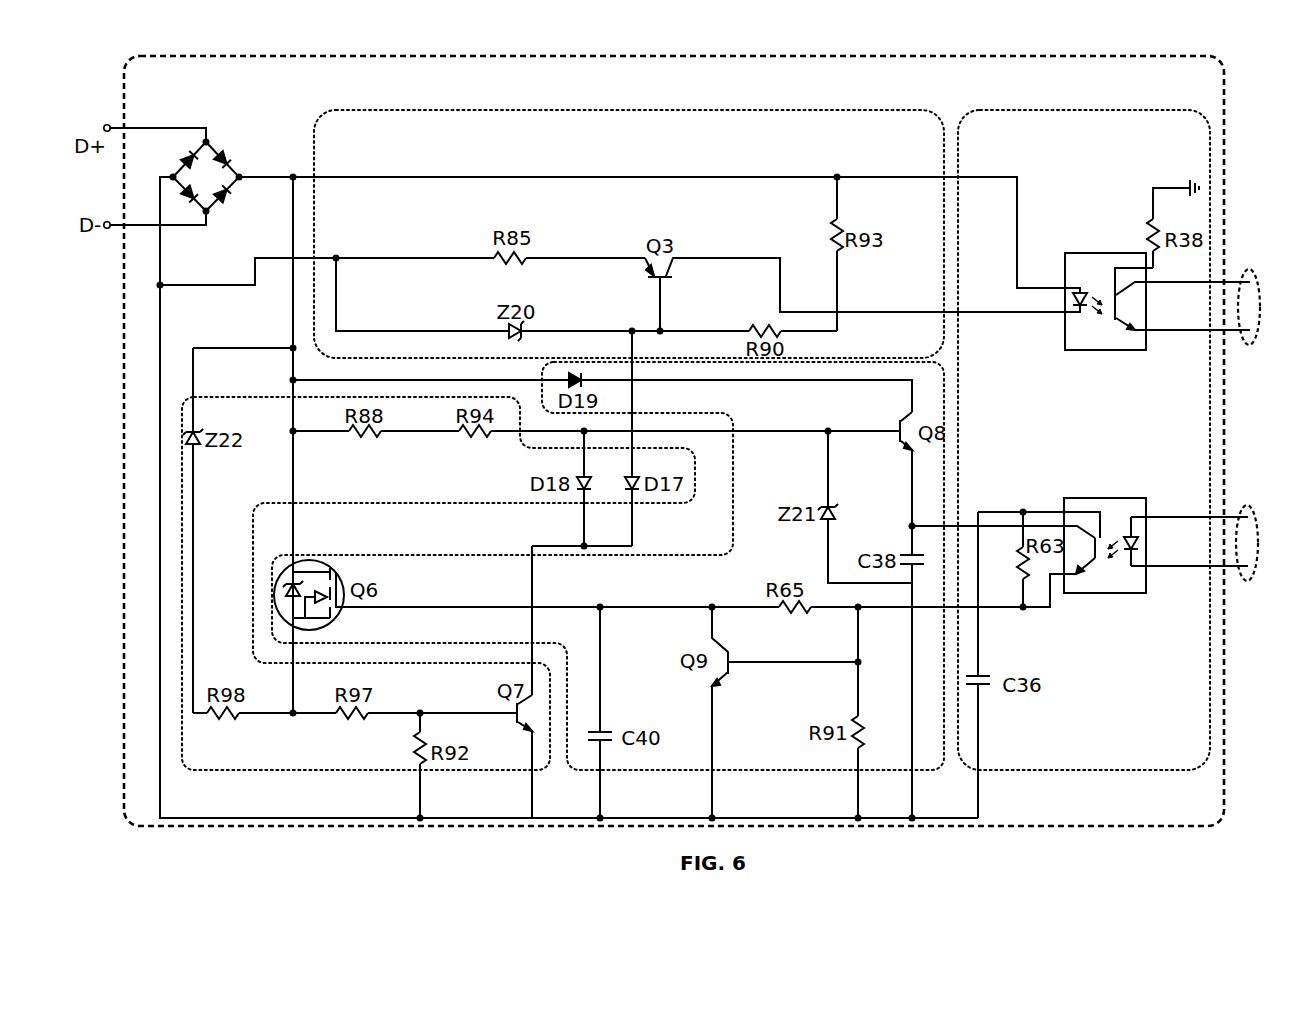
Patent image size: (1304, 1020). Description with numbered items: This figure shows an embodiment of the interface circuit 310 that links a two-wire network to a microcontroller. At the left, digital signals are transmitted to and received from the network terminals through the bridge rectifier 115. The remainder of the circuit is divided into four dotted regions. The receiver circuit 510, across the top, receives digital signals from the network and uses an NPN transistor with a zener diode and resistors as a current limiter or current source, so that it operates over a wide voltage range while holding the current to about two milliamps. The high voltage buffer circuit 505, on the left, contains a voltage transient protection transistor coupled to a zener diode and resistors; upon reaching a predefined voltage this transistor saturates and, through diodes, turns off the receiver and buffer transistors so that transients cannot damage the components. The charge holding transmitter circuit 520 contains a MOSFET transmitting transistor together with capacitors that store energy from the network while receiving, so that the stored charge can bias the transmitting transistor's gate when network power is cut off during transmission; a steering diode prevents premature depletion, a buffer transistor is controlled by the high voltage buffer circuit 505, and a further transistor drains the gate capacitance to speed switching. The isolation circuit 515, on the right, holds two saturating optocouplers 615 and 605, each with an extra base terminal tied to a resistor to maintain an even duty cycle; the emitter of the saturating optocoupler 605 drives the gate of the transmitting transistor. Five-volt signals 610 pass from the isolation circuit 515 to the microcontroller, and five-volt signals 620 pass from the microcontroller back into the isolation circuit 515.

The bridge rectifier 115 is at (218, 146).
The interface circuit 310 is at (1228, 118).
The high voltage buffer circuit 505 is at (277, 395).
The receiver circuit 510 is at (745, 108).
The isolation circuit 515 is at (1073, 108).
The charge holding transmitter circuit 520 is at (748, 771).
The saturating optocoupler 605 is at (1080, 497).
The signals 610 is at (1243, 266).
The saturating optocoupler 615 is at (1075, 252).
The signals 620 is at (1247, 580).